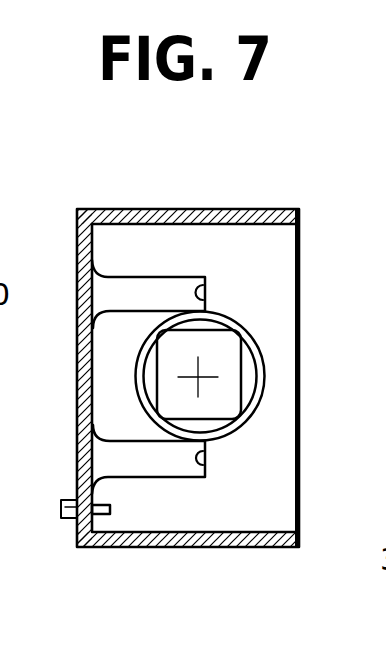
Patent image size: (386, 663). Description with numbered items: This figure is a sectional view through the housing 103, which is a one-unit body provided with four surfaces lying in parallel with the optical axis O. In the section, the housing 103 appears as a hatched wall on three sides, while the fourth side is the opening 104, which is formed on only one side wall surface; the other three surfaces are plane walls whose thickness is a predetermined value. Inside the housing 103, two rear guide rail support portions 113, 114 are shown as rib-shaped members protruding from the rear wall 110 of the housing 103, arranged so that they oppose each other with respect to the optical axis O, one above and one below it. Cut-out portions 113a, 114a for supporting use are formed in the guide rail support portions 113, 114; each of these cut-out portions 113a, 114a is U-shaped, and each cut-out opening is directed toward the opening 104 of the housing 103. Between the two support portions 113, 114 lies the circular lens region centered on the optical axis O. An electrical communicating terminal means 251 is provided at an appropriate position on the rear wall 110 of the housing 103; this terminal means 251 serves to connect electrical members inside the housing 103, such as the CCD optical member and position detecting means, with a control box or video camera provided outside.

The housing 103 is at (228, 209).
The opening 104 is at (302, 512).
The rear wall 110 is at (77, 414).
The rear guide rail support portion 113 is at (148, 290).
The cut-out portion 113a is at (206, 289).
The rear guide rail support portion 114 is at (156, 462).
The cut-out portion 114a is at (206, 453).
The electrical communicating terminal means 251 is at (62, 507).
The optical axis O is at (206, 374).